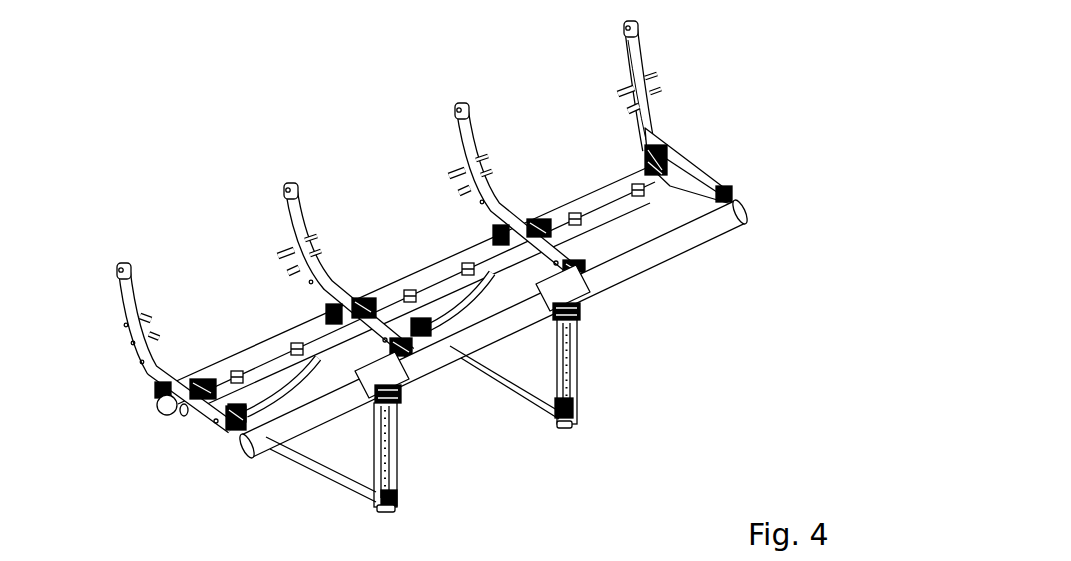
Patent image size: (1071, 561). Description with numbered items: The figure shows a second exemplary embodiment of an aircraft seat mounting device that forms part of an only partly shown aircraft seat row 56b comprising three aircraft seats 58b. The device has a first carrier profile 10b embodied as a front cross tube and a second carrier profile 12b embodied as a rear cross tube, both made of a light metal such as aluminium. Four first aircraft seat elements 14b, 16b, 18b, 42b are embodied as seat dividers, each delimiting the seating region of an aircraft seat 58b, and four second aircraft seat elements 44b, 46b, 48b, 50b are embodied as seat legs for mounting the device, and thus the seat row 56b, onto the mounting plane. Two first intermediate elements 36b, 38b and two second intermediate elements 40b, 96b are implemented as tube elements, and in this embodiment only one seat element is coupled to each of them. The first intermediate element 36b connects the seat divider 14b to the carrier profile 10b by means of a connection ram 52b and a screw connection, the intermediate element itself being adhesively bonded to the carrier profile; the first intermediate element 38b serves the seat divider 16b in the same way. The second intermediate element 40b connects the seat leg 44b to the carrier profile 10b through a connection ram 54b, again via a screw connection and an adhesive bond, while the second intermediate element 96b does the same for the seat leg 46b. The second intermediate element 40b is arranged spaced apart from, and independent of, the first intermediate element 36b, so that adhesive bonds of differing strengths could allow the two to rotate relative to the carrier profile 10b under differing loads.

The first carrier profile 10b is at (721, 226).
The second carrier profile 12b is at (576, 199).
The first aircraft seat element 14b is at (290, 224).
The first aircraft seat element 16b is at (458, 145).
The first aircraft seat element 18b is at (139, 296).
The first aircraft seat element 42b is at (640, 62).
The first intermediate element 36b is at (431, 365).
The first intermediate element 38b is at (598, 284).
The second intermediate element 40b is at (348, 408).
The second aircraft seat element 44b is at (372, 470).
The second aircraft seat element 46b is at (560, 384).
The second aircraft seat element 48b is at (281, 397).
The second aircraft seat element 50b is at (454, 314).
The connection ram 52b is at (395, 298).
The connection ram 54b is at (404, 390).
The aircraft seat row 56b is at (339, 432).
The aircraft seat 58b is at (433, 225).
The second intermediate element 96b is at (536, 350).